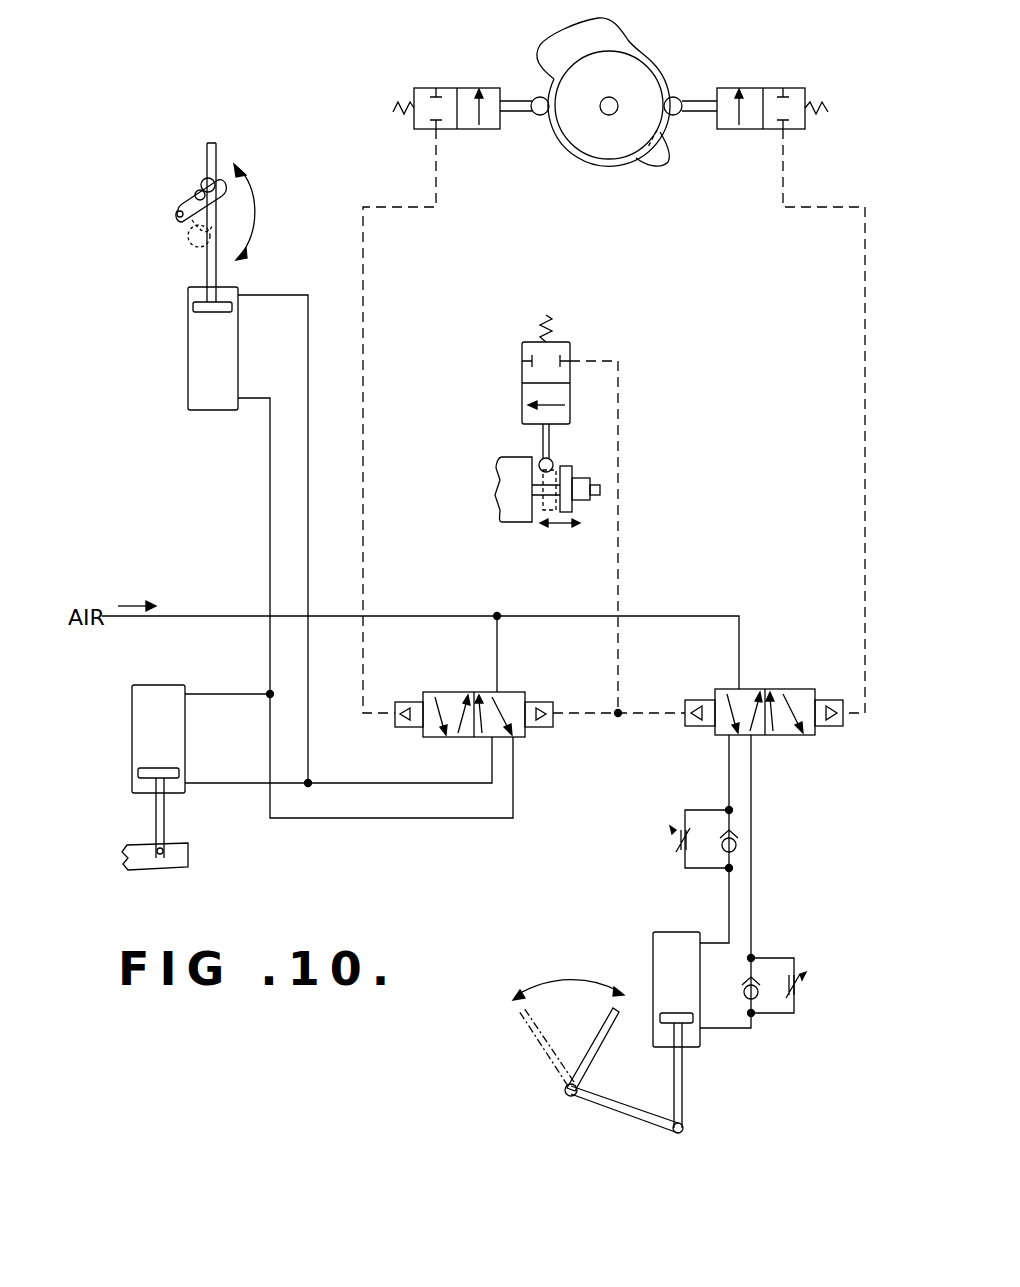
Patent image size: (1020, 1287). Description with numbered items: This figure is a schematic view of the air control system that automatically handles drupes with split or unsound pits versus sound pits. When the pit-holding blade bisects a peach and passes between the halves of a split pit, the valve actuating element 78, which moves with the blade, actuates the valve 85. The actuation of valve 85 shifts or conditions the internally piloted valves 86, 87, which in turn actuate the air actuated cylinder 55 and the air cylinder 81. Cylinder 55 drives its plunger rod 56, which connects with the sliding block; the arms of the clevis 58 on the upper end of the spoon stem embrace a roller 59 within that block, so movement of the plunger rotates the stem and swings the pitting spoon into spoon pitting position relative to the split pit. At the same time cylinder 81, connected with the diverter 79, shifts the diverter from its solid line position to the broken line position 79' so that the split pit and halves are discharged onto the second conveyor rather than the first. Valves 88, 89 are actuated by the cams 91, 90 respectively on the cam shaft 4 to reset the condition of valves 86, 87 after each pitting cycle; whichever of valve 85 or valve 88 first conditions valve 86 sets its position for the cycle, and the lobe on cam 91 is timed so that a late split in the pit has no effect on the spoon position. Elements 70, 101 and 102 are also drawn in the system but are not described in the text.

The cam shaft 4 is at (612, 97).
The air actuated cylinder 55 is at (205, 355).
The plunger rod 56 is at (216, 278).
The clevis 58 is at (192, 182).
The roller 59 is at (266, 148).
The stop block 70 is at (499, 522).
The valve actuating element 78 is at (568, 470).
The diverter 79 is at (595, 1056).
The broken line position of diverter 79' is at (528, 1049).
The air cylinder 81 is at (653, 943).
The valve 85 is at (522, 369).
The internally piloted valve 86 is at (444, 682).
The internally piloted valve 87 is at (799, 689).
The valve 88 is at (471, 88).
The valve 89 is at (775, 88).
The cam 90 is at (666, 163).
The cam 91 is at (566, 32).
The clamp plate 101 is at (134, 850).
The clamp cylinder 102 is at (133, 780).